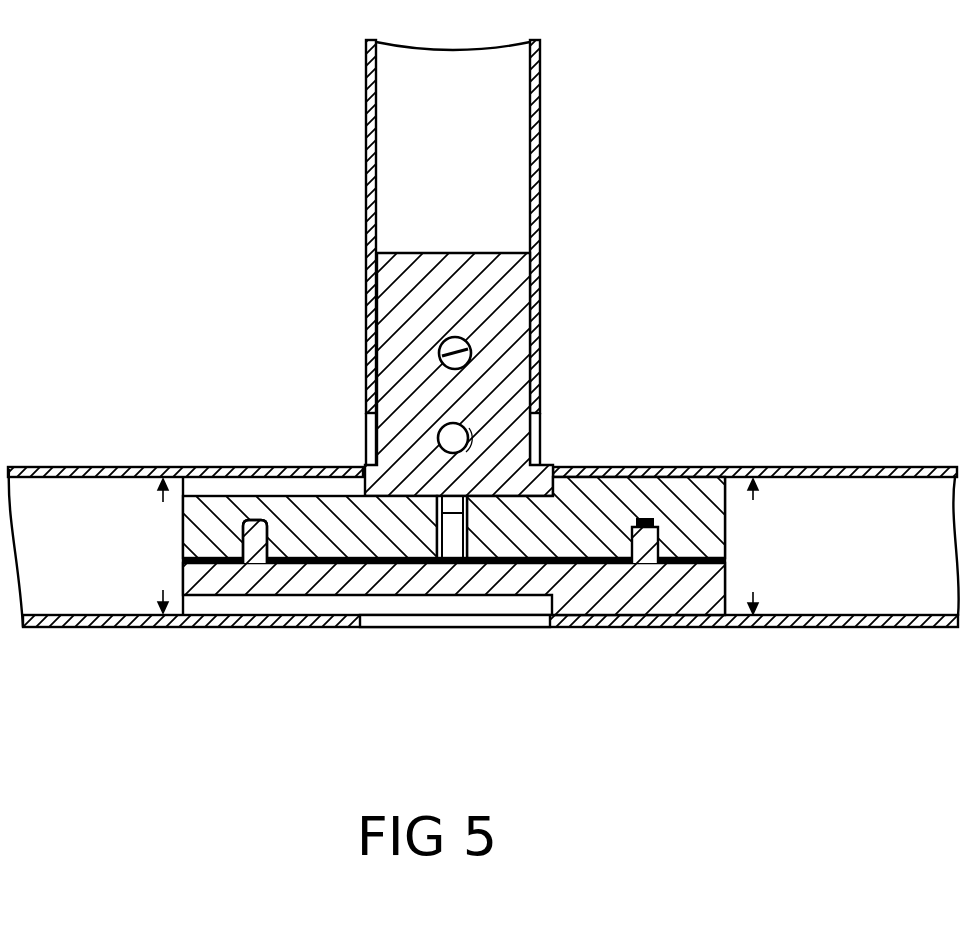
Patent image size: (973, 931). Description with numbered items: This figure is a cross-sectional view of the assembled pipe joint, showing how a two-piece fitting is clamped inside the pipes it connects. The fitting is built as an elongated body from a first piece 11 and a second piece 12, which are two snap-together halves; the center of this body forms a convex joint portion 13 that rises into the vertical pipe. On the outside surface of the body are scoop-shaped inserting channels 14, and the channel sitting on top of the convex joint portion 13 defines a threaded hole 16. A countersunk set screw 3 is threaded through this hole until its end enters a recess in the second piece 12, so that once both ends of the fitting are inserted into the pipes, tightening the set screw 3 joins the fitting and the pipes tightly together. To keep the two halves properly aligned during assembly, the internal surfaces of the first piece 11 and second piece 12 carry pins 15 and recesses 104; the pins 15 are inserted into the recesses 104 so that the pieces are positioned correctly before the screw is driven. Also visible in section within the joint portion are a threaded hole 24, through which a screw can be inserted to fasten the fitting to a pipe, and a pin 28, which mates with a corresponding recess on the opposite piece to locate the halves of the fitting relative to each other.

The countersunk set screw 3 is at (448, 540).
The first piece 11 is at (688, 493).
The second piece 12 is at (683, 602).
The convex joint portion 13 is at (498, 627).
The inserting channels 14 is at (302, 603).
The pins 15 is at (247, 545).
The threaded hole 16 is at (487, 493).
The threaded hole 24 is at (440, 430).
The pin 28 is at (470, 349).
The recesses 104 is at (643, 522).